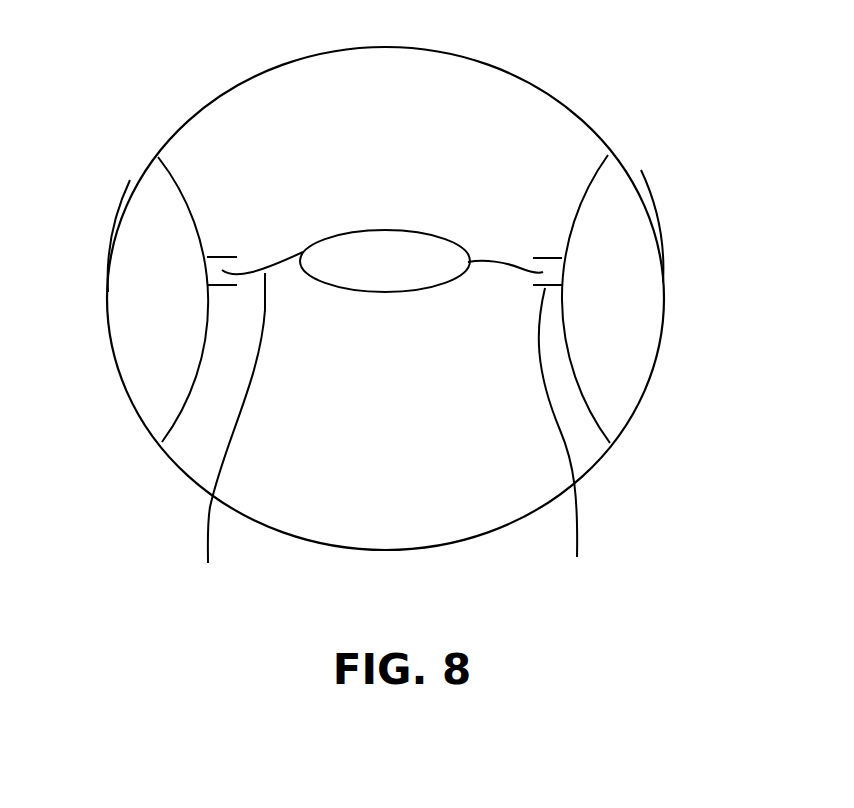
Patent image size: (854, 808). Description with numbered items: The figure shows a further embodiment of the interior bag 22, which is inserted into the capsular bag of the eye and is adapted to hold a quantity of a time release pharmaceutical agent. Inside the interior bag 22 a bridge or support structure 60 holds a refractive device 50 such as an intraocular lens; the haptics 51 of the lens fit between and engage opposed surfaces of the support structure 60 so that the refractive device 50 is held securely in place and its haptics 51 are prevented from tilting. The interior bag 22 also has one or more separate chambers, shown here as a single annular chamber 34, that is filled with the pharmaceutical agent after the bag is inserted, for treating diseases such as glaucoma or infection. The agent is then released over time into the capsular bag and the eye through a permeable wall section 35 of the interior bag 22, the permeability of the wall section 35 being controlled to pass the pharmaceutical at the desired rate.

The interior bag 22 is at (467, 58).
The annular chamber 34 is at (157, 235).
The permeable wall section 35 is at (108, 292).
The refractive device 50 is at (415, 245).
The haptics 51 is at (228, 428).
The support structure 60 is at (563, 423).